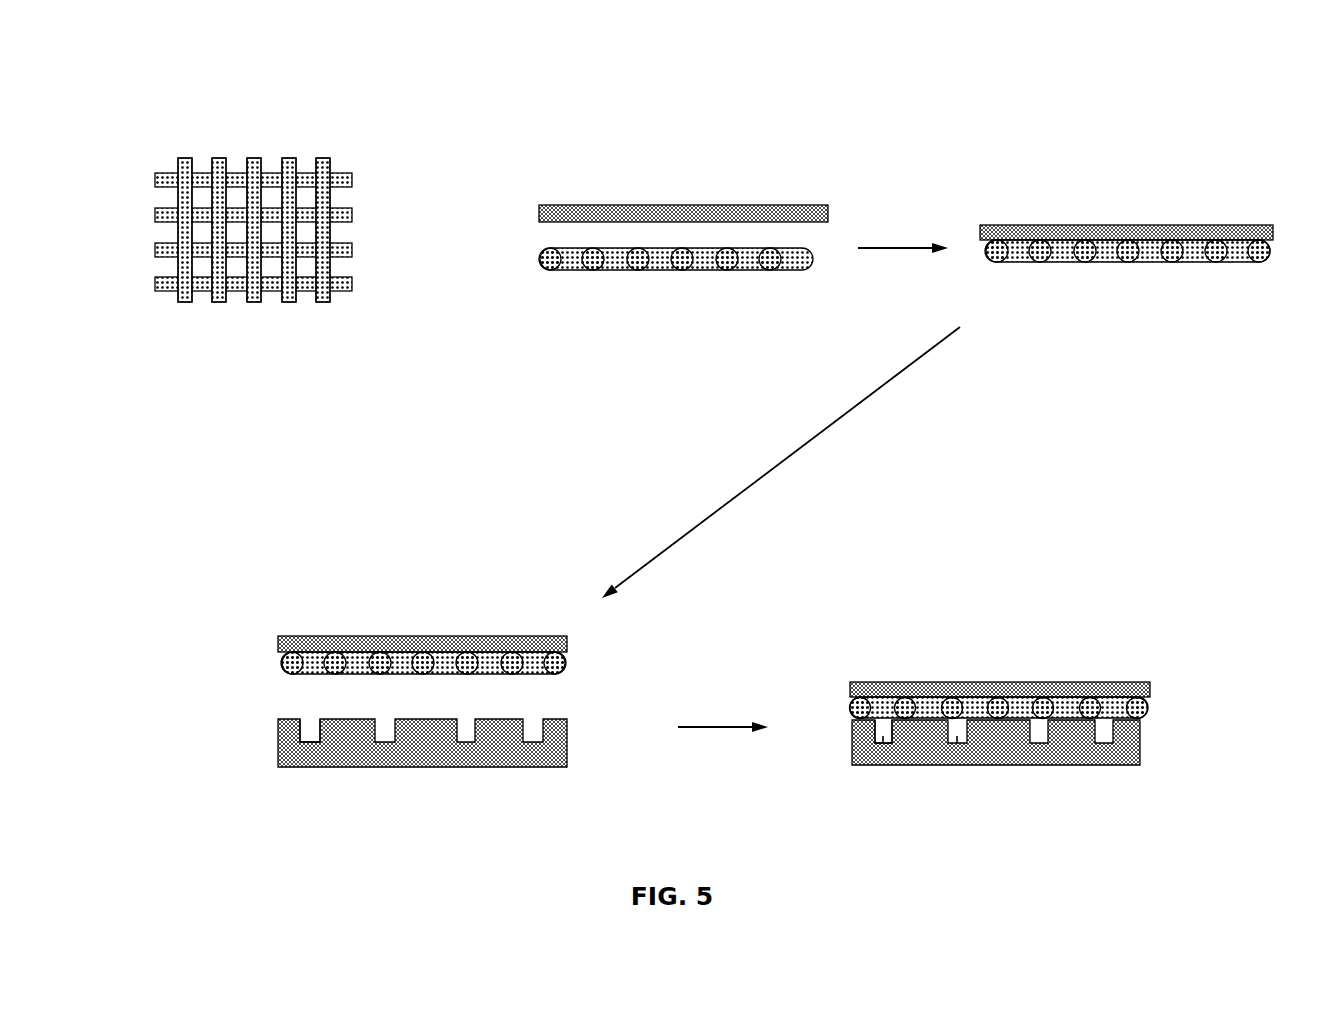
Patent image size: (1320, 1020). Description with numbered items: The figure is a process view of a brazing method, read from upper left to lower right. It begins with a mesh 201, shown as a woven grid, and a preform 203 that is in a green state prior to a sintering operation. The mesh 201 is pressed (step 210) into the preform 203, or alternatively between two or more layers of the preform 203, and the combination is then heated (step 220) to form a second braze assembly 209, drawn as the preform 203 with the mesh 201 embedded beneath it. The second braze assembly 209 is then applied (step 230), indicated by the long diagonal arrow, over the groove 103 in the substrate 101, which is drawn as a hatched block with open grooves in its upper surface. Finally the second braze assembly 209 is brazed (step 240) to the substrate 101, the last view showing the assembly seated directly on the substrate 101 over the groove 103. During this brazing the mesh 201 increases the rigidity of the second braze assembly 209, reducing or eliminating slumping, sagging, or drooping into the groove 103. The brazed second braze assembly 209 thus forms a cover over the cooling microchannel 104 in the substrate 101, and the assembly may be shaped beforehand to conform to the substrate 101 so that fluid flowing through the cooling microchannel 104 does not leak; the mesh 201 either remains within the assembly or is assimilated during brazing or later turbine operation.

The substrate 101 is at (342, 767).
The groove 103 is at (308, 738).
The cooling microchannel 104 is at (957, 743).
The mesh 201 is at (338, 172).
The preform 203 is at (657, 205).
The second braze assembly 209 is at (1052, 200).
The pressing step 210 is at (879, 234).
The heating step 220 is at (907, 262).
The applying step 230 is at (802, 471).
The brazing step 240 is at (708, 712).